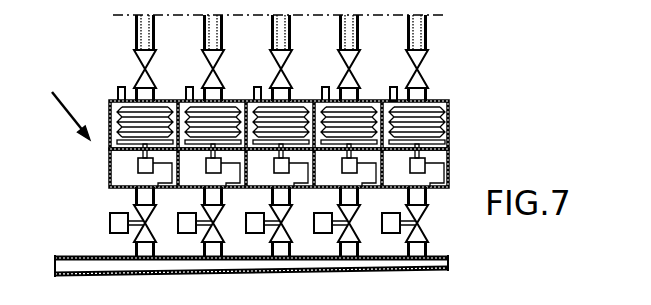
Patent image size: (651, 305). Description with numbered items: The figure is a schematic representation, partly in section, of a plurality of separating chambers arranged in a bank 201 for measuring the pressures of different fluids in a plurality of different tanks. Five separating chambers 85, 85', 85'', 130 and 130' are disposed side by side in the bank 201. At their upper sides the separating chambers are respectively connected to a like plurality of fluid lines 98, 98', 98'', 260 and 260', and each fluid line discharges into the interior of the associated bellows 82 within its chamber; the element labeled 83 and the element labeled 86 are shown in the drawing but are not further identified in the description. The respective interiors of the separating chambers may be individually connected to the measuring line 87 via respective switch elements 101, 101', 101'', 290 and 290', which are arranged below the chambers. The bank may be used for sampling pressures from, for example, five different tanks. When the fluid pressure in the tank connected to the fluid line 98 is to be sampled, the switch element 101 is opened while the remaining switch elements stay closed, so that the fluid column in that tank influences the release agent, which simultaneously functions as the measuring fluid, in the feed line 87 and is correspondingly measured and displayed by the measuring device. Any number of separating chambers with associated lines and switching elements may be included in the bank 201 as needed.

The bank 201 is at (68, 100).
The bellows 82 is at (448, 108).
The valve chamber 83 is at (448, 158).
The separating chamber 85 is at (112, 170).
The separating chamber 85' is at (197, 195).
The separating chamber 85'' is at (265, 195).
The vent 86 is at (392, 86).
The measuring line 87 is at (448, 261).
The fluid line 98 is at (167, 58).
The fluid line 98' is at (237, 58).
The fluid line 98'' is at (308, 58).
The switch element 101 is at (112, 245).
The switch element 101' is at (176, 245).
The switch element 101'' is at (244, 245).
The separating chamber 130 is at (334, 185).
The separating chamber 130' is at (401, 185).
The fluid line 260 is at (375, 58).
The fluid line 260' is at (451, 58).
The switch element 290 is at (306, 245).
The switch element 290' is at (374, 245).